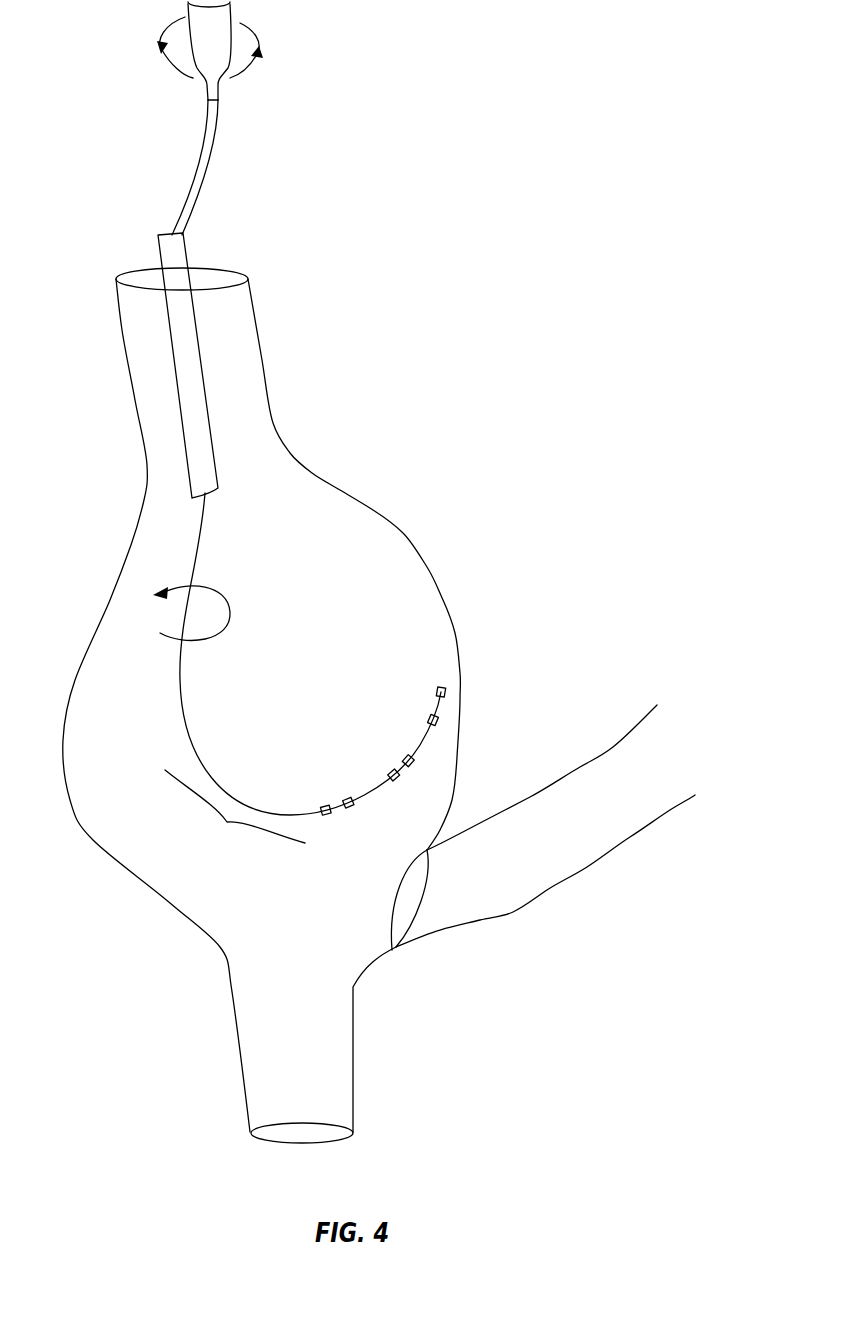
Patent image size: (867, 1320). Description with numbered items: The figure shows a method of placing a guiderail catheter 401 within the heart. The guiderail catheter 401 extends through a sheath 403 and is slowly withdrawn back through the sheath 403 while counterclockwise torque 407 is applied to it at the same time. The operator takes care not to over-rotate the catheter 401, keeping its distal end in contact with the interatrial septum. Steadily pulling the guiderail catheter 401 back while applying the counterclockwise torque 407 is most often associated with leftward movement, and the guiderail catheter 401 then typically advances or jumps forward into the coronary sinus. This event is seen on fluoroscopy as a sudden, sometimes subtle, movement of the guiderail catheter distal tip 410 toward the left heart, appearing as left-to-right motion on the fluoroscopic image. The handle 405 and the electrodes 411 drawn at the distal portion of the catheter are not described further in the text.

The guiderail catheter 401 is at (200, 553).
The sheath 403 is at (172, 355).
The handle 405 is at (215, 27).
The counterclockwise torque 407 is at (235, 817).
The guiderail catheter distal tip 410 is at (460, 672).
The electrodes 411 is at (442, 718).